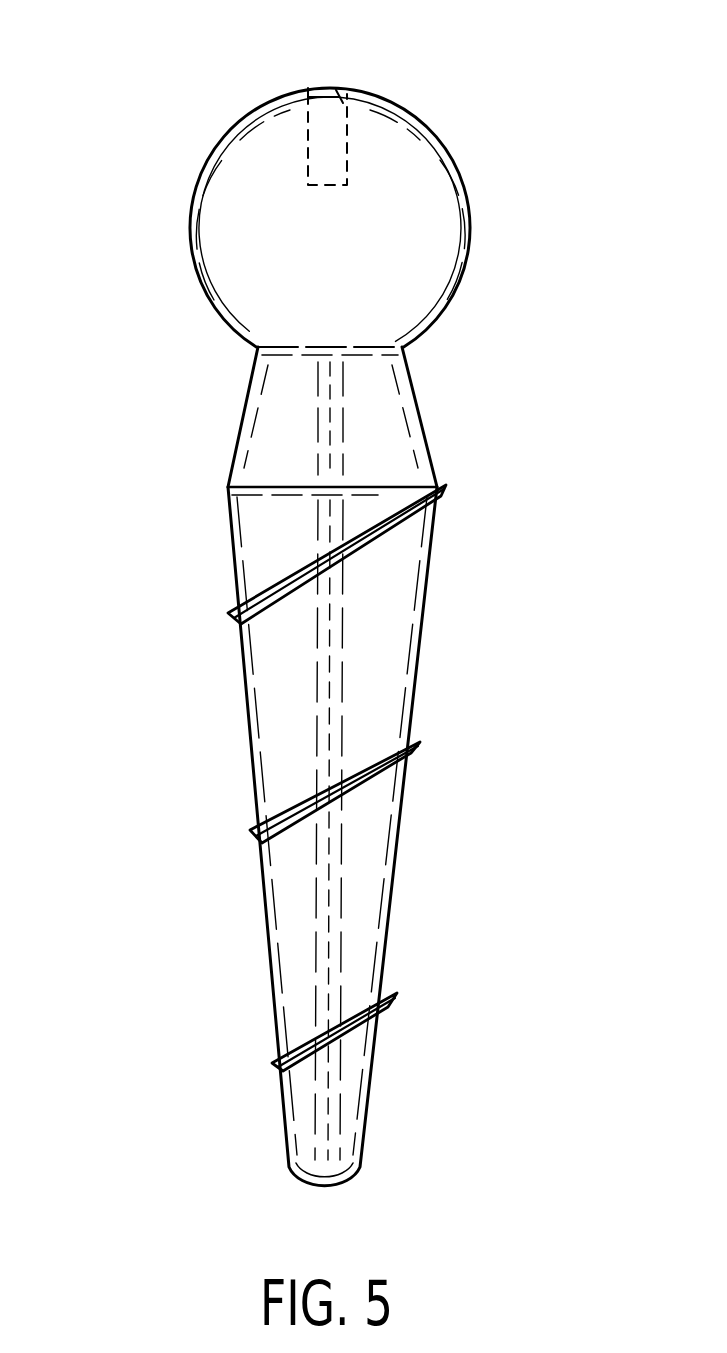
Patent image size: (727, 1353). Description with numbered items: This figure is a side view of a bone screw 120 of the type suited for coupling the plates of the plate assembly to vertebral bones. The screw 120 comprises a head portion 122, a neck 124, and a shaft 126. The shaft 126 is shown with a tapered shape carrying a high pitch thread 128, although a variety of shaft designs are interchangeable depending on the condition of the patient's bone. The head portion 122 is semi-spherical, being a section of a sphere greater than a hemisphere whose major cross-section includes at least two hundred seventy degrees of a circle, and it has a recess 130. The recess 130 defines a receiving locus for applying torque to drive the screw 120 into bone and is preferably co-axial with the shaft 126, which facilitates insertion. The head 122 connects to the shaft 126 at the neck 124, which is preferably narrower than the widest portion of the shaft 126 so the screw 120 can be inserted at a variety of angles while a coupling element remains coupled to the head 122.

The screw 120 is at (492, 168).
The head portion 122 is at (366, 261).
The neck 124 is at (415, 410).
The shaft 126 is at (414, 720).
The high pitch thread 128 is at (227, 620).
The recess 130 is at (343, 88).